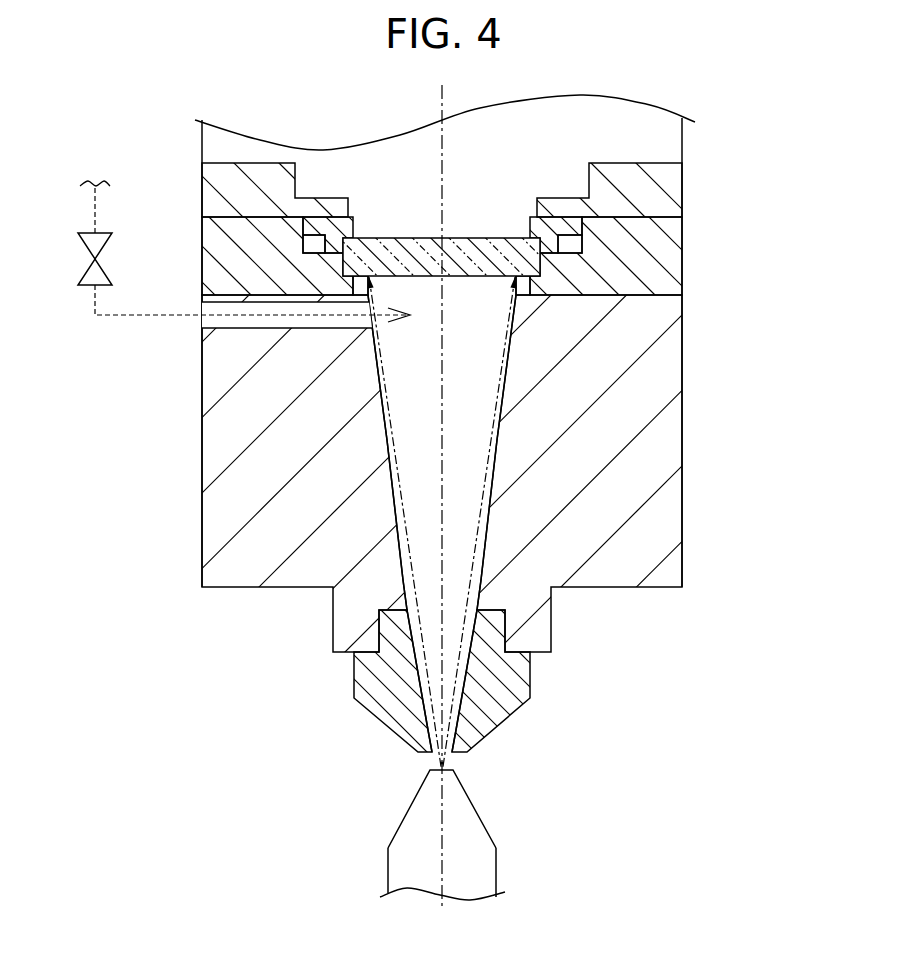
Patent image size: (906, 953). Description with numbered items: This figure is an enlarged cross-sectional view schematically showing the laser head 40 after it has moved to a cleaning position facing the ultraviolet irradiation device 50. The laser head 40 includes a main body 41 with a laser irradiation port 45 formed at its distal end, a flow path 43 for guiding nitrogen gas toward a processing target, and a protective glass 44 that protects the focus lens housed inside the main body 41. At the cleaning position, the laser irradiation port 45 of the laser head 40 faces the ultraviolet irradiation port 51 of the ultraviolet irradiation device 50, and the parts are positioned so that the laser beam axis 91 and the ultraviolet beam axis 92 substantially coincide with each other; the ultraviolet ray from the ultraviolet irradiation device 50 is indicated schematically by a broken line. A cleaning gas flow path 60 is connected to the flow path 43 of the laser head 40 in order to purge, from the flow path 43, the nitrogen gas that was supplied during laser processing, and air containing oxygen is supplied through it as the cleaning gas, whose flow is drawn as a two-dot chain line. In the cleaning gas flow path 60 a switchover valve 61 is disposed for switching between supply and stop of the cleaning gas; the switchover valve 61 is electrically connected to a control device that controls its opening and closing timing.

The laser head 40 is at (453, 497).
The main body 41 is at (683, 140).
The flow path 43 is at (388, 440).
The protective glass 44 is at (483, 243).
The laser irradiation port 45 is at (432, 754).
The ultraviolet irradiation device 50 is at (482, 877).
The ultraviolet irradiation port 51 is at (445, 770).
The cleaning gas flow path 60 is at (150, 315).
The switchover valve 61 is at (90, 272).
The laser beam axis 91 is at (437, 178).
The ultraviolet beam axis 92 is at (447, 378).